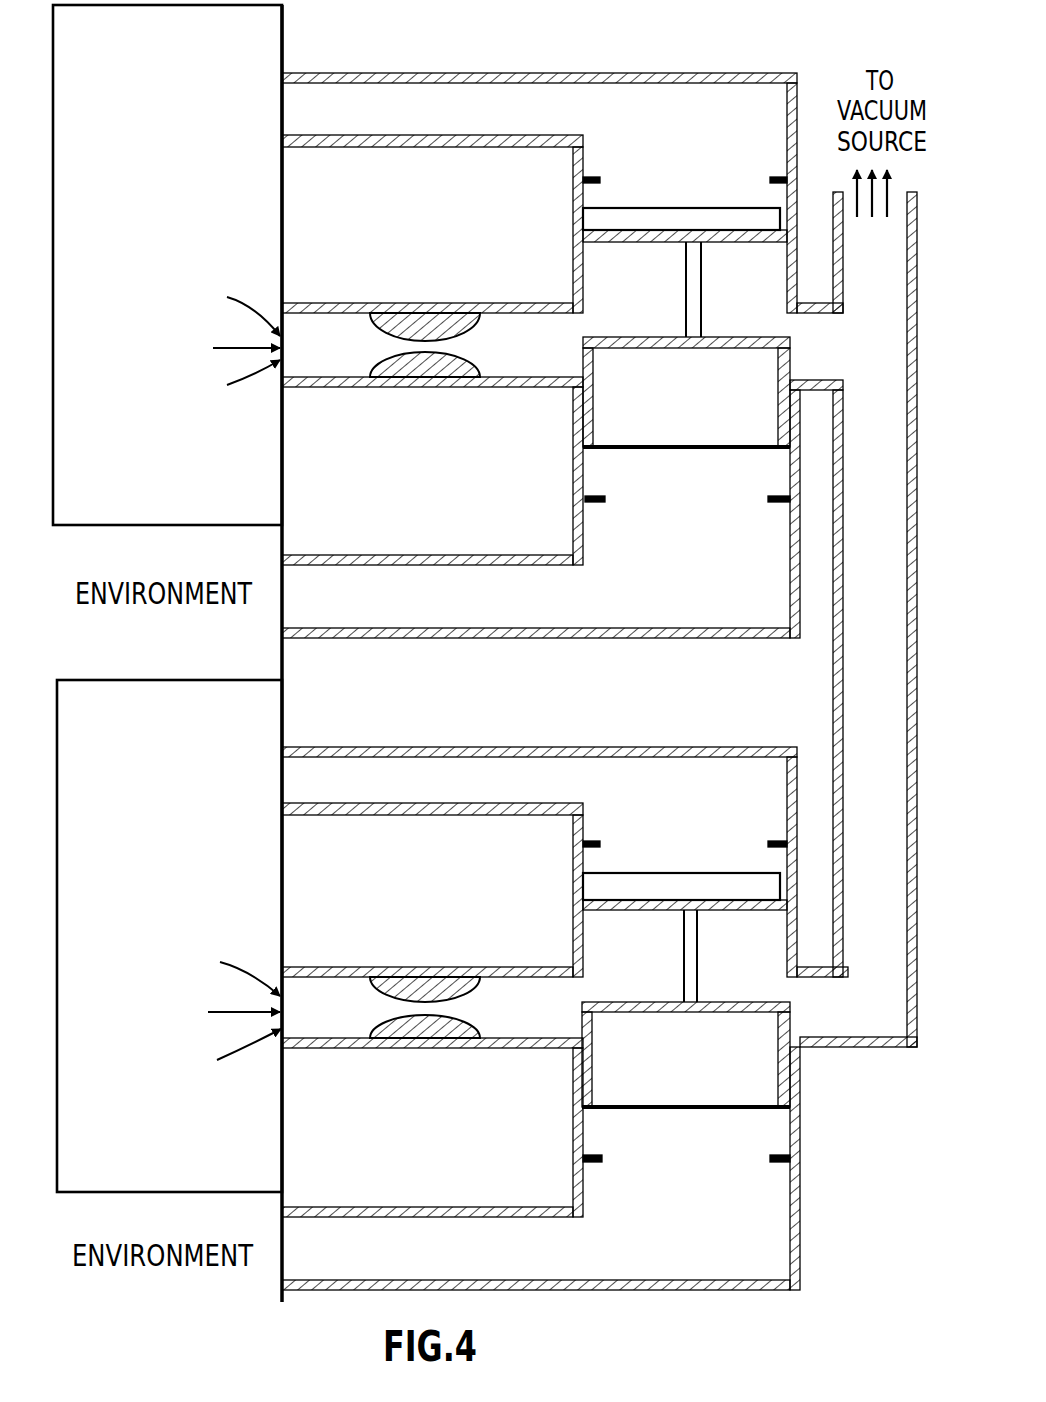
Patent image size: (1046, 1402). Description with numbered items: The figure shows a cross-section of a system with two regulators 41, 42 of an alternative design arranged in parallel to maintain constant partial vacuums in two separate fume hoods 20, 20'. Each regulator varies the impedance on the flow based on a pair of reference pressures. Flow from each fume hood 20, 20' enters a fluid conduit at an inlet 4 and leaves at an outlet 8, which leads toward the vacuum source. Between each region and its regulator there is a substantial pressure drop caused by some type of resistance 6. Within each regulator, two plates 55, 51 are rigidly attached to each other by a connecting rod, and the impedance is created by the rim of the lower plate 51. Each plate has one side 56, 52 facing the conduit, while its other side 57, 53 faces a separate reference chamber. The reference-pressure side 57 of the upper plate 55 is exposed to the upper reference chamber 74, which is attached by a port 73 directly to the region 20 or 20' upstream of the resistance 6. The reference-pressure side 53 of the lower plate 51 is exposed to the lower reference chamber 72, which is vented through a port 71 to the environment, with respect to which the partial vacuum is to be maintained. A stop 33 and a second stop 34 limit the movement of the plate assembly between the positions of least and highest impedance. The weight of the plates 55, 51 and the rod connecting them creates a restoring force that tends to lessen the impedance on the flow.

The fume hood 20 is at (167, 265).
The second fume hood 20' is at (169, 936).
The inlet 4 is at (340, 387).
The resistance 6 is at (427, 373).
The outlet 8 is at (823, 392).
The stop 33 is at (773, 505).
The second stop 34 is at (778, 177).
The regulator 41 is at (553, 287).
The regulator 42 is at (557, 950).
The second plate 51 is at (743, 348).
The conduit-facing side of second plate 52 is at (640, 337).
The reference-pressure side of second plate 53 is at (645, 348).
The first plate 55 is at (772, 242).
The conduit-facing side of first plate 56 is at (600, 242).
The reference-pressure side of first plate 57 is at (623, 230).
The port 71 is at (530, 557).
The lower reference chamber 72 is at (706, 504).
The port 73 is at (552, 73).
The upper reference chamber 74 is at (698, 167).